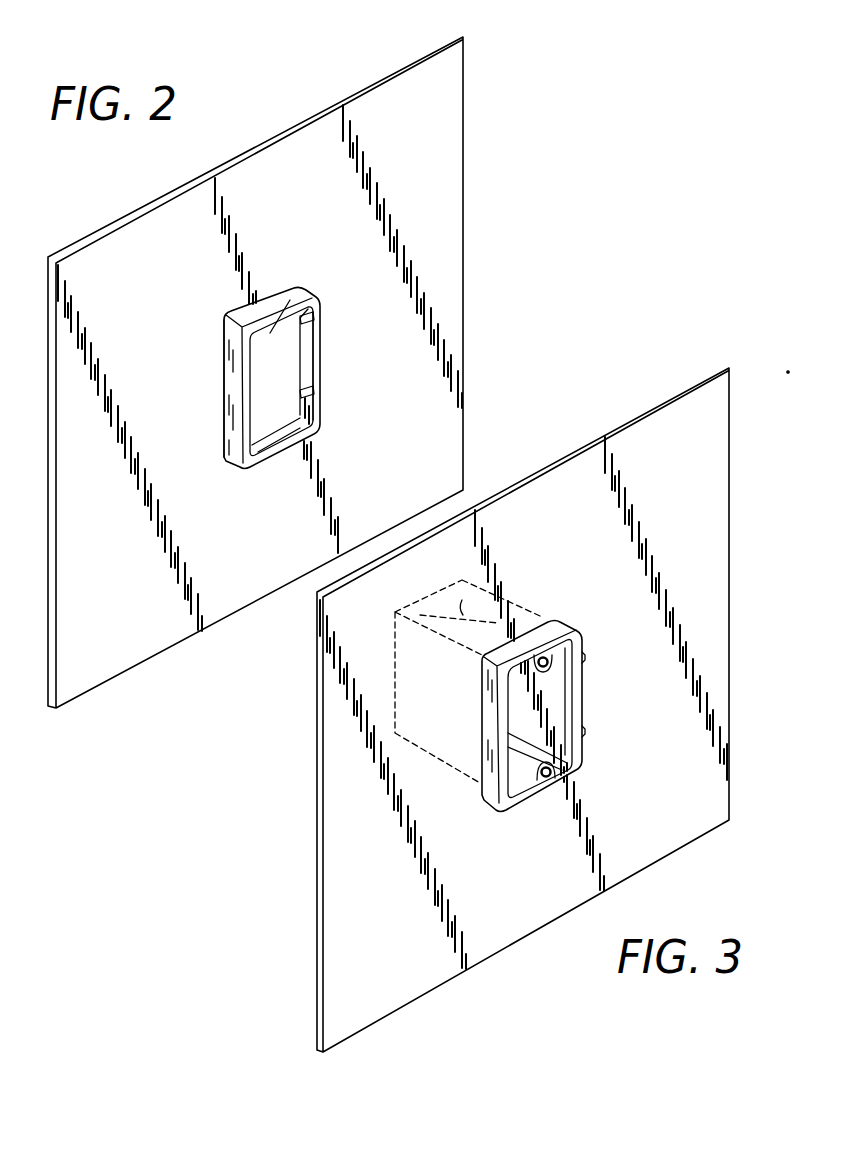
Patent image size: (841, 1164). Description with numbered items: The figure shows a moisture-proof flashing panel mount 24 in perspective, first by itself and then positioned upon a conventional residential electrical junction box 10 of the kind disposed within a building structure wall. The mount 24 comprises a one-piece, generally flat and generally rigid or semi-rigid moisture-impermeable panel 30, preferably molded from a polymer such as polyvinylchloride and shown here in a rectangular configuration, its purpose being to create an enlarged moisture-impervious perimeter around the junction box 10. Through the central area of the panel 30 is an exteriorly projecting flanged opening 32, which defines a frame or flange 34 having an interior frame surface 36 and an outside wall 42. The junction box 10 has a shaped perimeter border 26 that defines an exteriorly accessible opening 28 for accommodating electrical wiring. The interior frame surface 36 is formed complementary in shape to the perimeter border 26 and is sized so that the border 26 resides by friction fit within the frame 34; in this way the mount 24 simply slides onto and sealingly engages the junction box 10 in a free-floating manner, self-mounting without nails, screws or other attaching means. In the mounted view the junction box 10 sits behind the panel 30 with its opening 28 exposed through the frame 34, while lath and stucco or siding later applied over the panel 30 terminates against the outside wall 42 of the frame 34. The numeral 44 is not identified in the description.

In FIG. 3, the residential electrical junction box 10 is at (450, 772).
In FIG. 2, the flashing panel mount 24 is at (308, 368).
In FIG. 3, the flashing panel mount 24 is at (554, 676).
In FIG. 3, the perimeter border 26 is at (567, 716).
In FIG. 3, the exteriorly accessible opening 28 is at (562, 712).
In FIG. 2, the moisture-impermeable panel 30 is at (453, 266).
In FIG. 3, the moisture-impermeable panel 30 is at (712, 515).
In FIG. 2, the exteriorly projecting flanged opening 32 is at (276, 351).
In FIG. 2, the frame 34 is at (323, 376).
In FIG. 2, the interior frame surface 36 is at (308, 340).
In FIG. 2, the outside wall 42 is at (225, 398).
In FIG. 2, the lower tab 44 is at (323, 418).